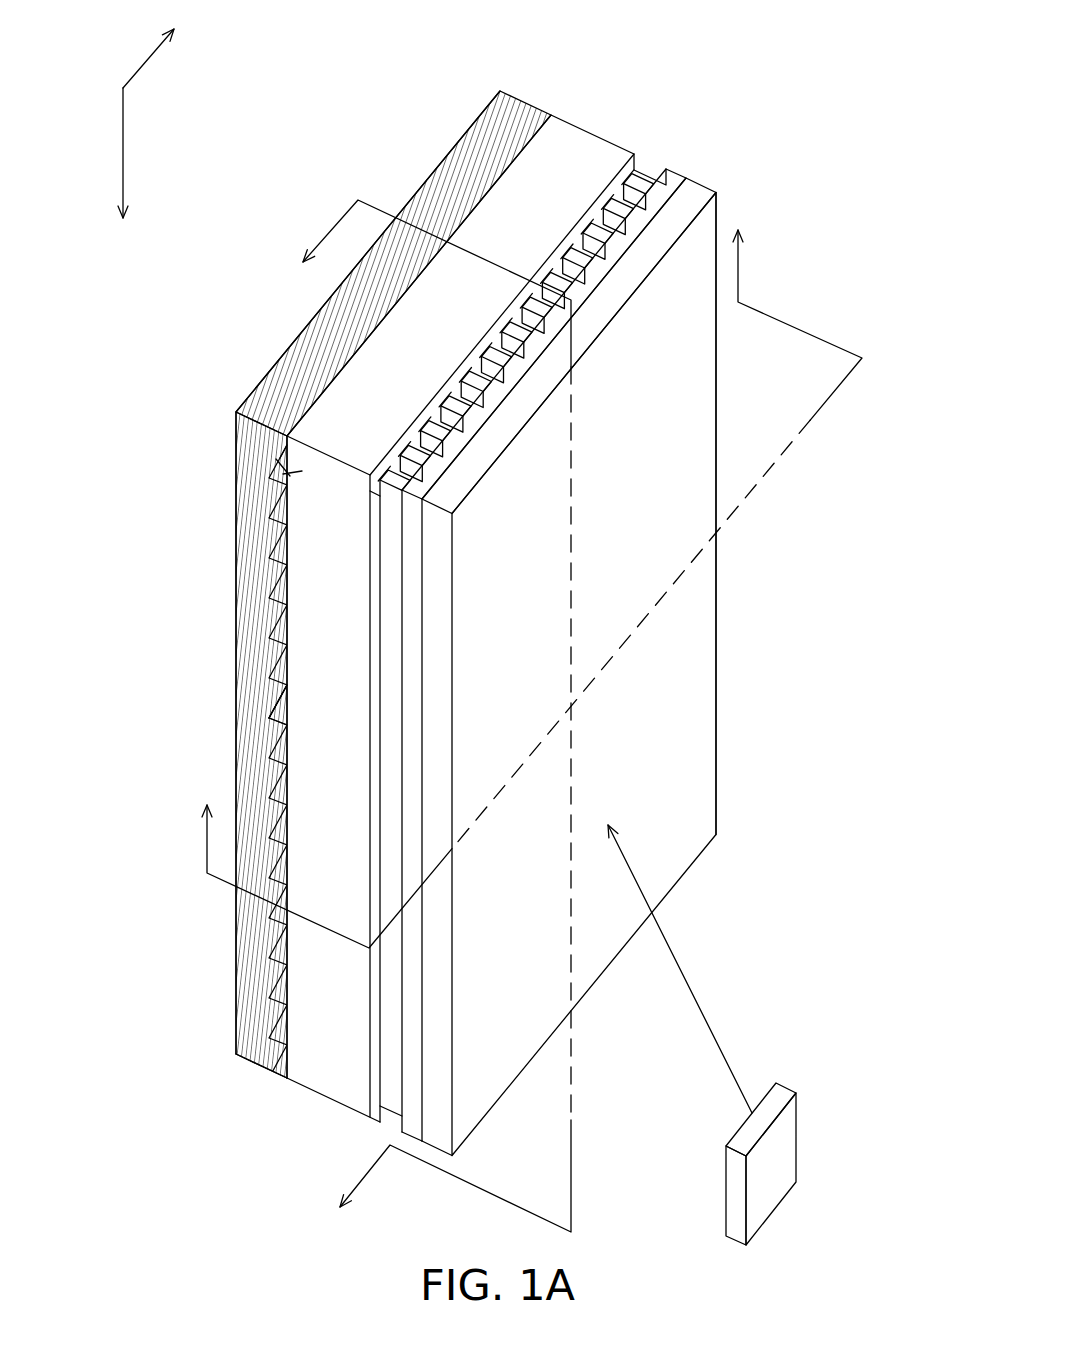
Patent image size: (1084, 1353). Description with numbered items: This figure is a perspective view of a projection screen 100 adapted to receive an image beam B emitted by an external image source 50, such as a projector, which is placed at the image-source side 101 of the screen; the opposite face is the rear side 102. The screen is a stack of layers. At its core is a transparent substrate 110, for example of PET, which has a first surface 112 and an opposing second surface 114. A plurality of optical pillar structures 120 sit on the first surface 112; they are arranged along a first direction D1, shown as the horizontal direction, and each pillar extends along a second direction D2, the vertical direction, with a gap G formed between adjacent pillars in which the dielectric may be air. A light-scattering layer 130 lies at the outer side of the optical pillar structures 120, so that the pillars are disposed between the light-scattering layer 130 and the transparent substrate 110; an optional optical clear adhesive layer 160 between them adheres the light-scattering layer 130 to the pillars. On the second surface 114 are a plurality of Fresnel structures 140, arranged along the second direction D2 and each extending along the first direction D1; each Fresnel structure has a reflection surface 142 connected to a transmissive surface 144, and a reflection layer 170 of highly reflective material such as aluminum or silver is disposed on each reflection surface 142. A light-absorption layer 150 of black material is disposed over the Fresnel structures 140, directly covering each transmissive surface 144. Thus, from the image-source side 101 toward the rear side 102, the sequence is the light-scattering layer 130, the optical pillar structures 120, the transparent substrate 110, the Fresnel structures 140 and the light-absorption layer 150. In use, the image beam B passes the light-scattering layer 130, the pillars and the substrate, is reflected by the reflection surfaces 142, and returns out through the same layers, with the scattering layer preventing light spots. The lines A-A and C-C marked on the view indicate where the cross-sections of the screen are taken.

The projection screen 100 is at (894, 1258).
The light-absorption layer 150 is at (510, 112).
The Fresnel structures 140 is at (277, 660).
The reflection layers 170 is at (277, 707).
The reflection surface 142 is at (292, 715).
The transmissive surface 144 is at (268, 723).
The second surface 114 is at (277, 1068).
The rear side 102 is at (254, 323).
The transparent substrate 110 is at (590, 143).
The first surface 112 is at (373, 1112).
The optical pillar structures 120 is at (637, 170).
The gap G is at (433, 418).
The optical clear adhesive layer 160 is at (672, 178).
The light-scattering layer 130 is at (695, 197).
The image-source side 101 is at (802, 243).
The external image source 50 is at (796, 1092).
The first direction D1 is at (163, 45).
The second direction D2 is at (125, 174).
The line A- A is at (522, 583).
The image beam B is at (676, 953).
The line C- C is at (427, 717).